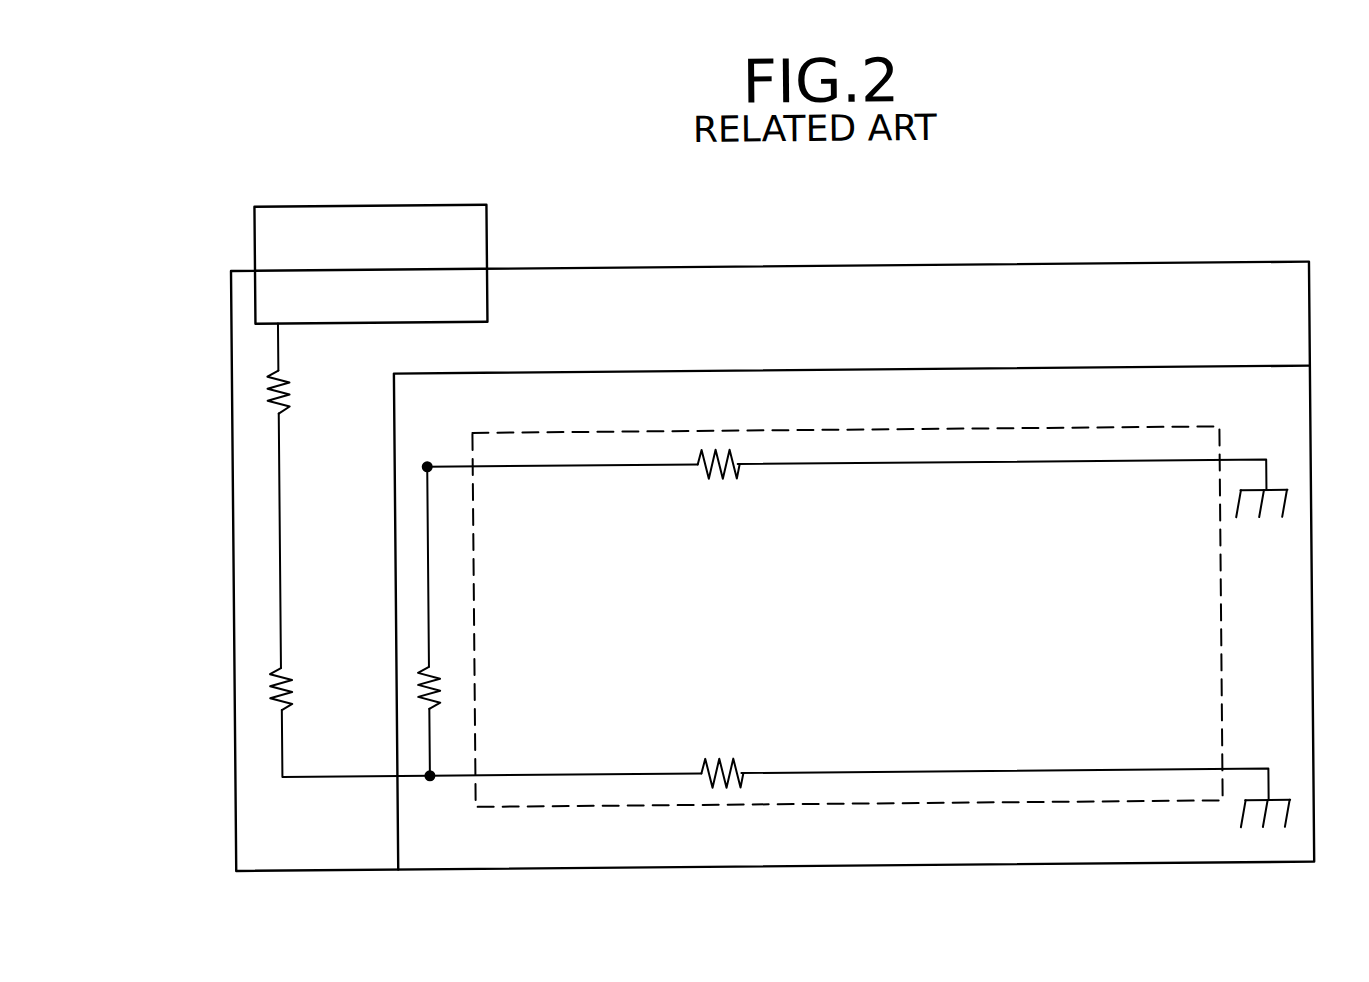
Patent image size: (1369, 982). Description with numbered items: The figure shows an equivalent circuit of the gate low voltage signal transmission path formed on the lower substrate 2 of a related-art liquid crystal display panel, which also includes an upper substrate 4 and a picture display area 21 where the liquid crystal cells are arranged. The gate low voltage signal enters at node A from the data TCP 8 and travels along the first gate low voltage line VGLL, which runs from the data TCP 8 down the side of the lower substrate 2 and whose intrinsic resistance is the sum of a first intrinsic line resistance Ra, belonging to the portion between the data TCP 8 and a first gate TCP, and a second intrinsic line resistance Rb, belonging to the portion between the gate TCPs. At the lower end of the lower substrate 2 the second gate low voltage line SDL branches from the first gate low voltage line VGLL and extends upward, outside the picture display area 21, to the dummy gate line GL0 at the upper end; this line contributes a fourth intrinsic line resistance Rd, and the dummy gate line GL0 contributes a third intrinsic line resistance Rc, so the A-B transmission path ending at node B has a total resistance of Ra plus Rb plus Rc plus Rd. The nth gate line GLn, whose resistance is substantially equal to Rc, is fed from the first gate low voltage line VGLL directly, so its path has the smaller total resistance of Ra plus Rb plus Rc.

The lower substrate 2 is at (1309, 324).
The upper substrate 4 is at (1310, 542).
The data TCP 8 is at (487, 235).
The picture display area 21 is at (772, 620).
The node A is at (193, 306).
The node B is at (1253, 431).
The first gate low voltage line VGLL is at (276, 500).
The second gate low voltage line SDL is at (426, 538).
The first intrinsic line resistance Ra is at (303, 390).
The second intrinsic line resistance Rb is at (307, 689).
The third intrinsic line resistance Rc is at (719, 619).
The fourth intrinsic line resistance Rd is at (451, 687).
The dummy gate line GL0 is at (898, 468).
The nth gate line GLn is at (891, 778).